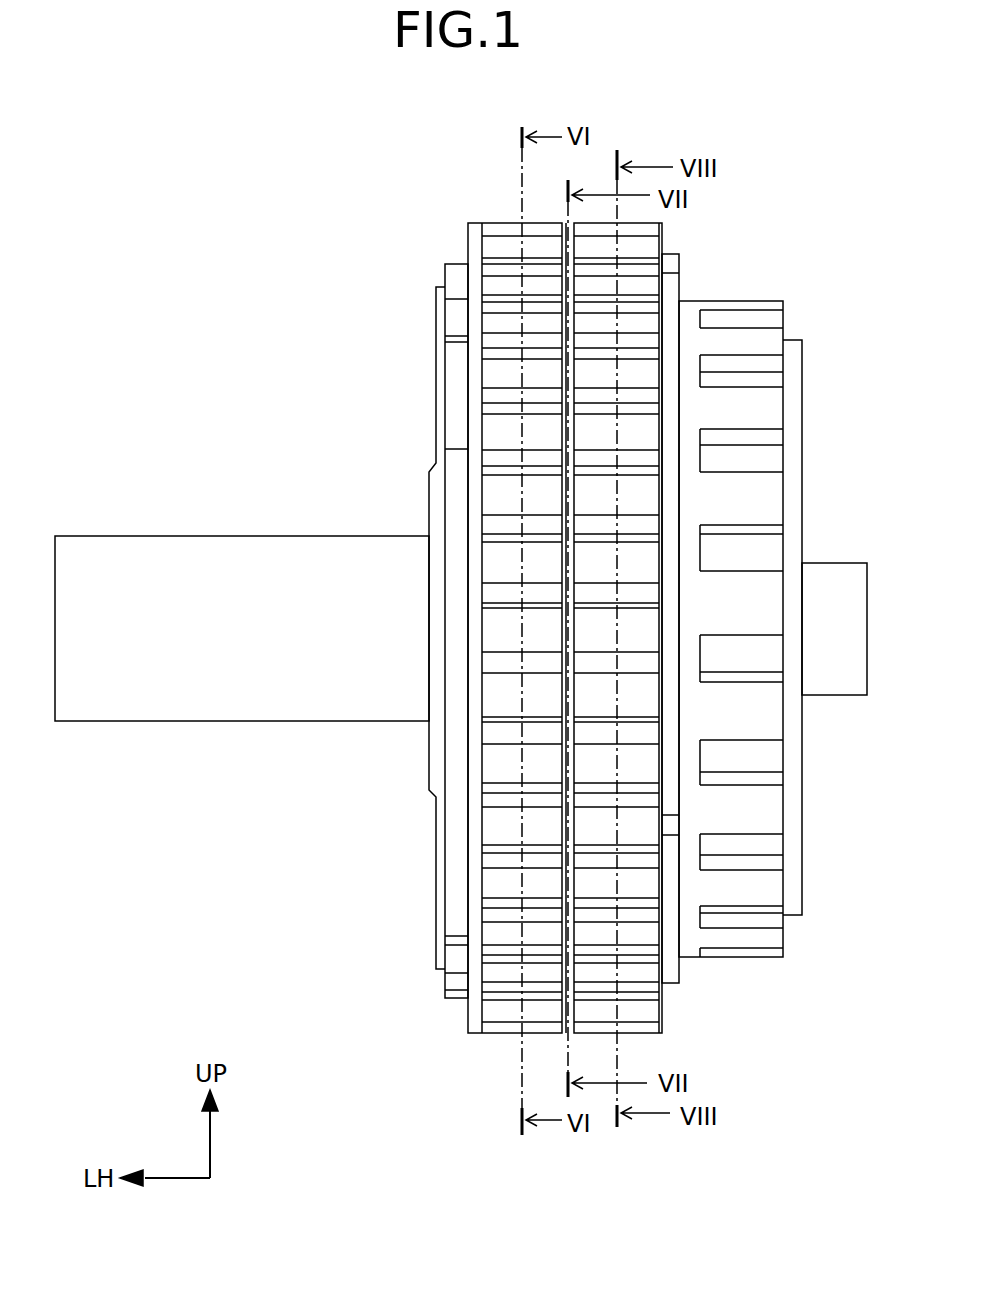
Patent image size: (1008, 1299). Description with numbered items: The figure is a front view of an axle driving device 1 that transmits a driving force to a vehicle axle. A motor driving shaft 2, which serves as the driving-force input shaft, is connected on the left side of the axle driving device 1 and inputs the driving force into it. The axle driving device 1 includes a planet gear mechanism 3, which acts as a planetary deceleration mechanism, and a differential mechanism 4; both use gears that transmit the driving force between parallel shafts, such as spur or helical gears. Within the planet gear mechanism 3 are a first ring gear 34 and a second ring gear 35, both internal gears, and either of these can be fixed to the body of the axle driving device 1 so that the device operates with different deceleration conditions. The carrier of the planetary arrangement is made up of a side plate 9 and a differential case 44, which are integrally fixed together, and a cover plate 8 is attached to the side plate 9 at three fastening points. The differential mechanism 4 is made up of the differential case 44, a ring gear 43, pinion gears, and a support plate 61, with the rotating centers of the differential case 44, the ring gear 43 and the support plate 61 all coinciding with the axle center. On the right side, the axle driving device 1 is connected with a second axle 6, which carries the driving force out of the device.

The axle driving device 1 is at (255, 146).
The motor driving shaft 2 is at (266, 612).
The planet gear mechanism 3 is at (459, 218).
The differential mechanism 4 is at (741, 234).
The second axle 6 is at (843, 625).
The cover plate 8 is at (430, 498).
The side plate 9 is at (455, 379).
The first ring gear 34 is at (493, 1011).
The second ring gear 35 is at (640, 1010).
The ring gear 43 is at (748, 923).
The differential case 44 is at (668, 969).
The support plate 61 is at (790, 769).